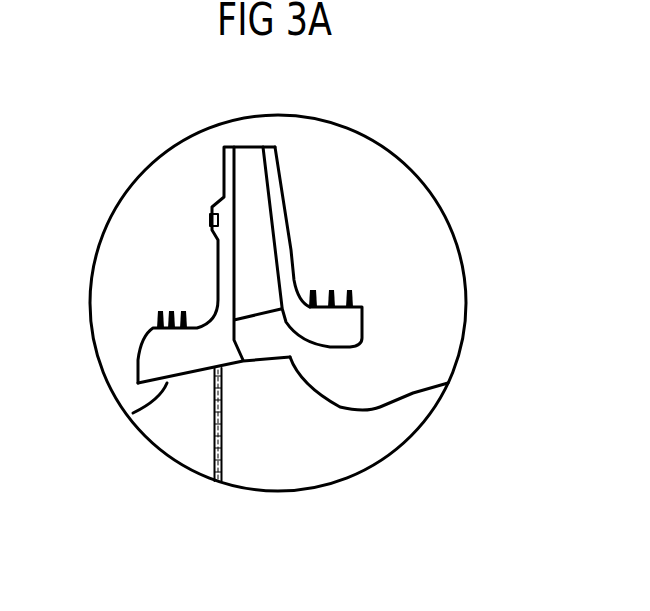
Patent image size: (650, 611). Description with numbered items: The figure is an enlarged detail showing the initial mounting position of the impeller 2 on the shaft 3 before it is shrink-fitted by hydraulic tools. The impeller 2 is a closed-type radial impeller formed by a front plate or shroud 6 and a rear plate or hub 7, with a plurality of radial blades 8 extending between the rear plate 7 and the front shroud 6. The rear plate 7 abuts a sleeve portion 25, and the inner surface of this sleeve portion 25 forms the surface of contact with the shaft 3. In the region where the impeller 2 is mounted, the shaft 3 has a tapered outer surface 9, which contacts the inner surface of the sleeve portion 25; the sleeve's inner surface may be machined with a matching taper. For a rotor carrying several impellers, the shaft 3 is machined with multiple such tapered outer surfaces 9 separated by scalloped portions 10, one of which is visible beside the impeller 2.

The impeller wheel 2 is at (210, 192).
The shaft 3 is at (180, 417).
The front plate or shroud 6 is at (287, 257).
The rear plate or hub 7 is at (210, 232).
The radial blades 8 is at (258, 183).
The tapered outer surface 9 is at (265, 362).
The scalloped portions 10 is at (387, 403).
The sleeve portion 25 is at (152, 367).